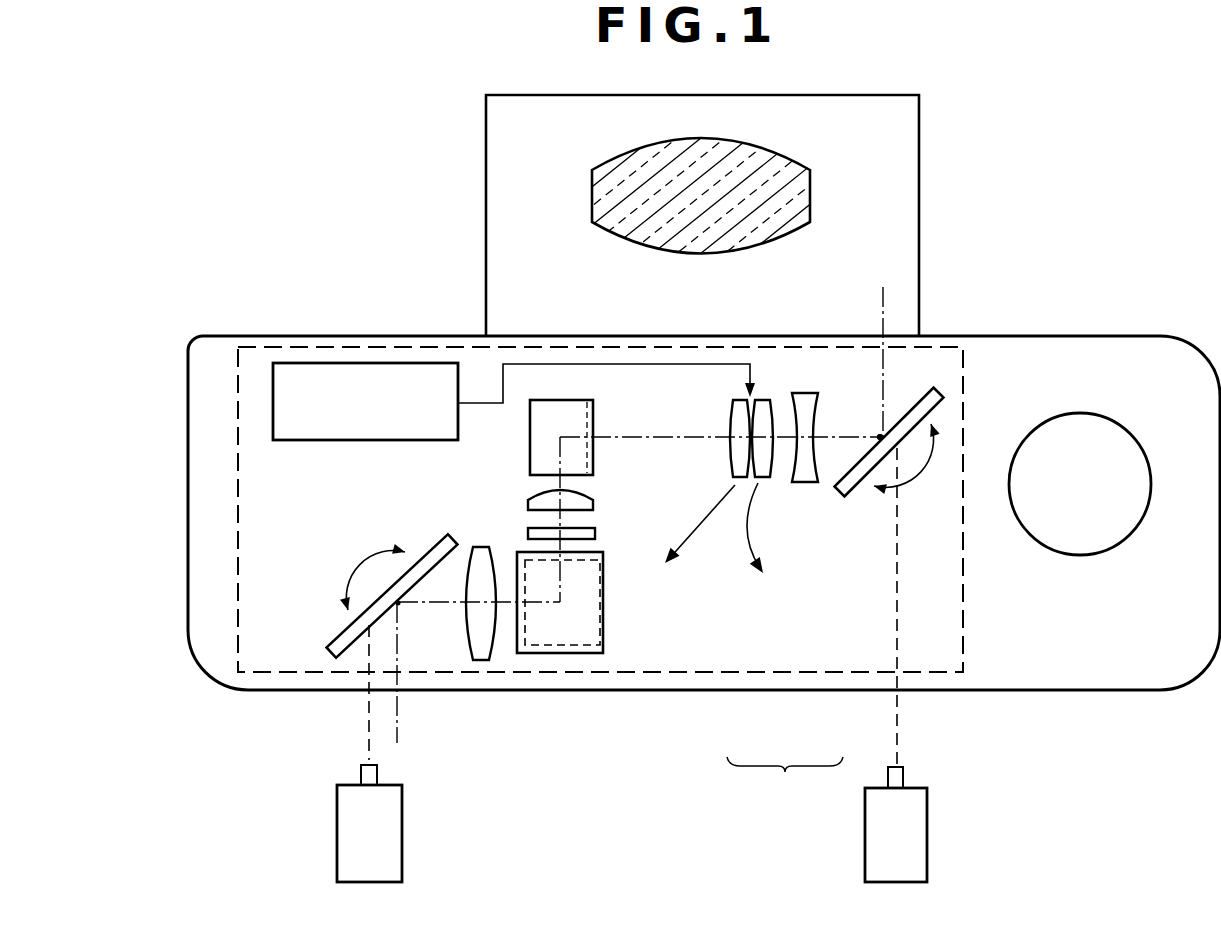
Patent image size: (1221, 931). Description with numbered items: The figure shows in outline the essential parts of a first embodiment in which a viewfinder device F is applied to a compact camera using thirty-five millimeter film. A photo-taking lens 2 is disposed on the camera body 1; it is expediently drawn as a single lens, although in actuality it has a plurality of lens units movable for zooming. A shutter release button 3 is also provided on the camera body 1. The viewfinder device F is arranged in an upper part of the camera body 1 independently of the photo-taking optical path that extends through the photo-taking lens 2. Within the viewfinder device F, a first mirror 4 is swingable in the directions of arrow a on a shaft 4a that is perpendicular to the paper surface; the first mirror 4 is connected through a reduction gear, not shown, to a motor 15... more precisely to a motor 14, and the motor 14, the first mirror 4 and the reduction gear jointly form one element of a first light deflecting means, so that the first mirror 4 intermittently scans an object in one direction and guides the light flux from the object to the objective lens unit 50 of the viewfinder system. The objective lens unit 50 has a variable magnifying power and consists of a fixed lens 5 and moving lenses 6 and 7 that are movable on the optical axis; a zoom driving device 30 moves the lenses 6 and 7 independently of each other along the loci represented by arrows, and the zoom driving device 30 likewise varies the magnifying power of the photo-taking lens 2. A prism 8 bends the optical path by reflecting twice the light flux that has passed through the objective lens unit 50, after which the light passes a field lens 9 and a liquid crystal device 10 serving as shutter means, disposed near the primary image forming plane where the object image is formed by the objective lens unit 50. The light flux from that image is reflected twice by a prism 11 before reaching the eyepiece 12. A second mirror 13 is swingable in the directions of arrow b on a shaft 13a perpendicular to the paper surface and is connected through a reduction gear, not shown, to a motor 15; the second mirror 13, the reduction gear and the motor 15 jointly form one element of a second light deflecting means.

The camera body 1 is at (1122, 372).
The photo-taking lens 2 is at (640, 214).
The shutter release button 3 is at (1086, 533).
The first mirror 4 is at (858, 494).
The shaft 4a is at (876, 432).
The fixed lens 5 is at (802, 482).
The moving lens 6 is at (765, 478).
The moving lens 7 is at (740, 478).
The prism 8 is at (594, 415).
The field lens 9 is at (596, 501).
The liquid crystal device 10 is at (600, 534).
The prism 11 is at (606, 620).
The eyepiece 12 is at (485, 546).
The second mirror 13 is at (340, 636).
The shaft 13a is at (403, 608).
The motor 14 is at (927, 852).
The motor 15 is at (402, 840).
The zoom driving device 30 is at (317, 441).
The objective lens unit 50 is at (785, 785).
The viewfinder device F is at (259, 348).
The arrow a is at (911, 459).
The arrow b is at (373, 575).